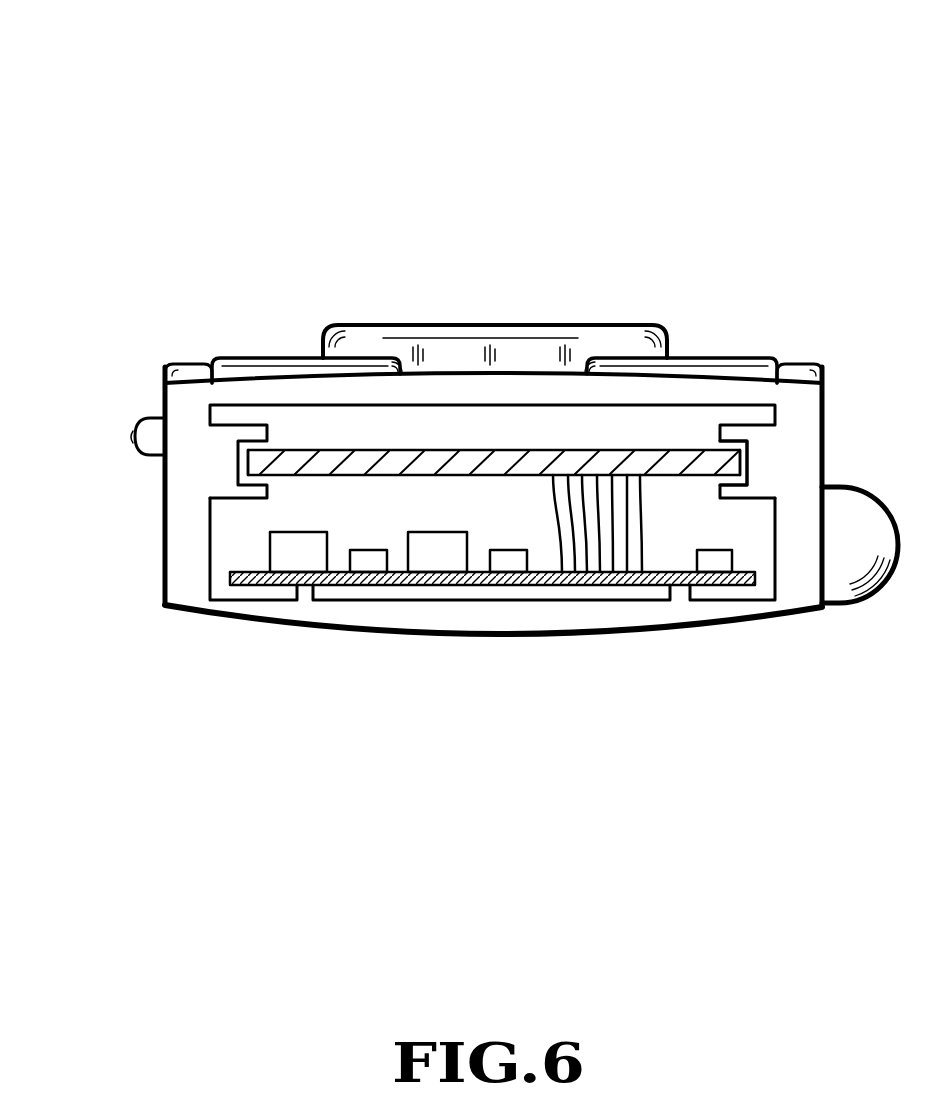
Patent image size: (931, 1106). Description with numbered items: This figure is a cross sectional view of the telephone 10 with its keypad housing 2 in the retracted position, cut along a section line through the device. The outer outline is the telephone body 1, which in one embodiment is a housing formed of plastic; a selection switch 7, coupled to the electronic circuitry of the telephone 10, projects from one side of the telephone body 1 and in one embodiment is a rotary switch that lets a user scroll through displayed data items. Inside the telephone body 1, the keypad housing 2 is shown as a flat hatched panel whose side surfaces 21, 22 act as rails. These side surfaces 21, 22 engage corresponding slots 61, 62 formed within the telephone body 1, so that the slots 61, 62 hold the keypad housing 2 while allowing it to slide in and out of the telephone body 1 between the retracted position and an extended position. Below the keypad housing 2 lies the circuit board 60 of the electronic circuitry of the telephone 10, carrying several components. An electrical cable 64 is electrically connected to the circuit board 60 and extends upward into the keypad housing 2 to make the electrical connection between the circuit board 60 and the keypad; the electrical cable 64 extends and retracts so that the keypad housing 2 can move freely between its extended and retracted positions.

The telephone 10 is at (108, 68).
The telephone body 1 is at (643, 632).
The keypad housing 2 is at (475, 450).
The selection switch 7 is at (140, 418).
The side surface 21 is at (238, 462).
The side surface 22 is at (742, 462).
The circuit board 60 is at (248, 582).
The slot 61 is at (243, 445).
The slot 62 is at (733, 447).
The electrical cable 64 is at (645, 533).